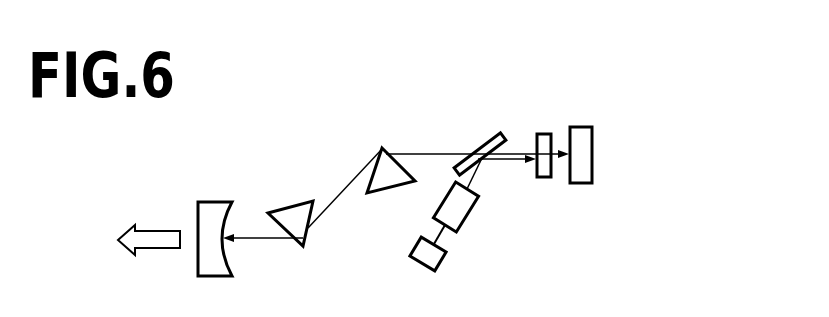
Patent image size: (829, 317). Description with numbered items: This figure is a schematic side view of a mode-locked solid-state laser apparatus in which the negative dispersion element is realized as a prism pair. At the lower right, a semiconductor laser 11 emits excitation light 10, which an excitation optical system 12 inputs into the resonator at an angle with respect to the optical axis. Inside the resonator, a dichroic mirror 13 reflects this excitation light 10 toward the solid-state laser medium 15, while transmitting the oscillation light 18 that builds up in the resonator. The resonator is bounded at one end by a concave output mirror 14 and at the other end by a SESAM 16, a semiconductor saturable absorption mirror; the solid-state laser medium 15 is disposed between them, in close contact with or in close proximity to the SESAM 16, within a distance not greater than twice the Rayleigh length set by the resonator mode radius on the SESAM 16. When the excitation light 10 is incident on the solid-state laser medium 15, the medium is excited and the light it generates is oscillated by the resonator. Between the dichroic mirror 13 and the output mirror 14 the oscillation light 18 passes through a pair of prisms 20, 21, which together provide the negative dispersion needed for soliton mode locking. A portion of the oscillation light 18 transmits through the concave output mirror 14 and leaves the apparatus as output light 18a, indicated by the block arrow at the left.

The excitation light 10 is at (508, 160).
The semiconductor laser 11 is at (410, 250).
The excitation optical system 12 is at (434, 212).
The dichroic mirror 13 is at (478, 150).
The concave output mirror 14 is at (210, 202).
The solid-state laser medium 15 is at (544, 133).
The SESAM 16 is at (583, 125).
The oscillation light 18 is at (260, 240).
The output light 18a is at (155, 230).
The prism 20 is at (290, 207).
The prism 21 is at (383, 148).